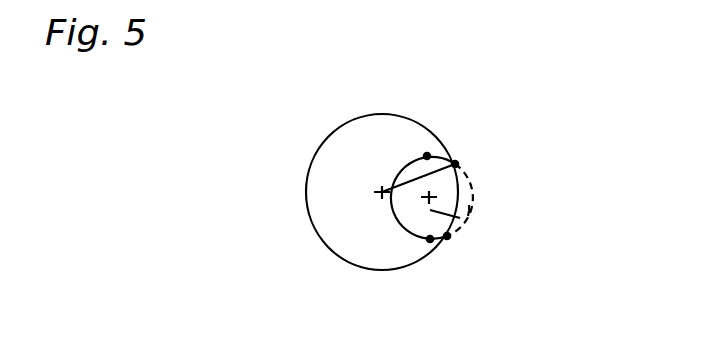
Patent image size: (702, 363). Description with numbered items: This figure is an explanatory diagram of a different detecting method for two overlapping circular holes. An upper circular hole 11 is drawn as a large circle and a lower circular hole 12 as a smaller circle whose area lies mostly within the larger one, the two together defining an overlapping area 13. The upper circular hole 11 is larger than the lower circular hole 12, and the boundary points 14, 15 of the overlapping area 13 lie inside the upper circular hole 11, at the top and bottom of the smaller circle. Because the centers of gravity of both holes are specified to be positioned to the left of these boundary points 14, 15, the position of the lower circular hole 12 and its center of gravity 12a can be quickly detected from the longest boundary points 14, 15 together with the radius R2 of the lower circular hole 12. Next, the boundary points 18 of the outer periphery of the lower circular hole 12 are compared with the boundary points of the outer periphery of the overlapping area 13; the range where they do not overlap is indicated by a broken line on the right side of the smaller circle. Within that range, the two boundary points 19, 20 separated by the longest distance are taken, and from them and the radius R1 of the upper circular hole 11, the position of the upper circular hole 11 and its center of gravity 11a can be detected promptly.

The upper circular hole 11 is at (327, 163).
The center of gravity of the upper circular hole 11a is at (381, 194).
The lower circular hole 12 is at (408, 236).
The center of gravity of the lower circular hole 12a is at (430, 198).
The overlapping area 13 is at (468, 190).
The boundary point of the overlapping area 14 is at (427, 155).
The boundary point of the overlapping area 15 is at (429, 198).
The boundary points of the outer periphery of the lower circular hole 18 is at (470, 207).
The boundary point 19 is at (455, 164).
The boundary point 20 is at (448, 238).
The radius of the upper circular hole R1 is at (412, 182).
The radius of the lower circular hole R2 is at (460, 218).